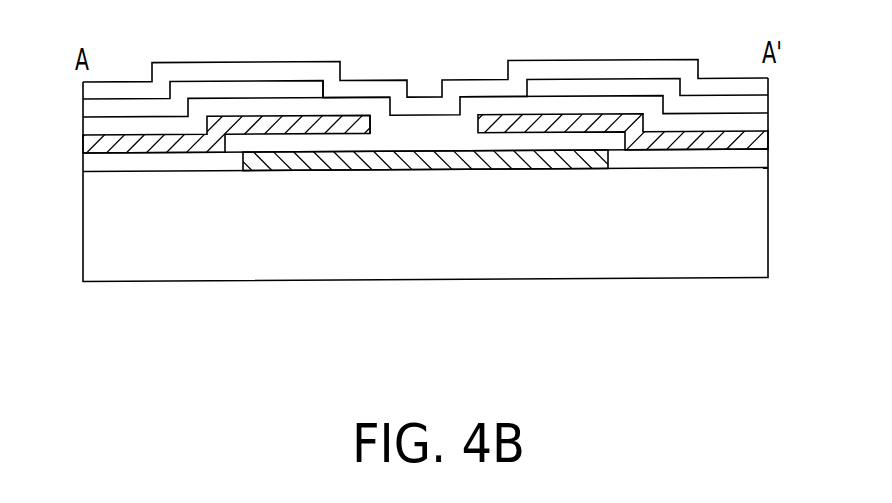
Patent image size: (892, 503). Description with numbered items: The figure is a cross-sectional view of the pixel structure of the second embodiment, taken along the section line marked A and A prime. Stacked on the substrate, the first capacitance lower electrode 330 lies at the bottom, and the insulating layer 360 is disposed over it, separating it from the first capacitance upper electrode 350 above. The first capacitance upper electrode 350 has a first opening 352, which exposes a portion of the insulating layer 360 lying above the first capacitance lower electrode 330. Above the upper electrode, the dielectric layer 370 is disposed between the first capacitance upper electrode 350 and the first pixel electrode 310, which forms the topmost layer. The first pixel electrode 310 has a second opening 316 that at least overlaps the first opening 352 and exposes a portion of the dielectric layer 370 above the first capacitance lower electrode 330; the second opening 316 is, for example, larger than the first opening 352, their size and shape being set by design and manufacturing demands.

The first pixel electrode 310 is at (238, 92).
The second opening 316 is at (326, 88).
The first capacitance lower electrode 330 is at (575, 160).
The first capacitance upper electrode 350 is at (341, 121).
The first opening 352 is at (376, 125).
The insulating layer 360 is at (503, 143).
The dielectric layer 370 is at (277, 108).